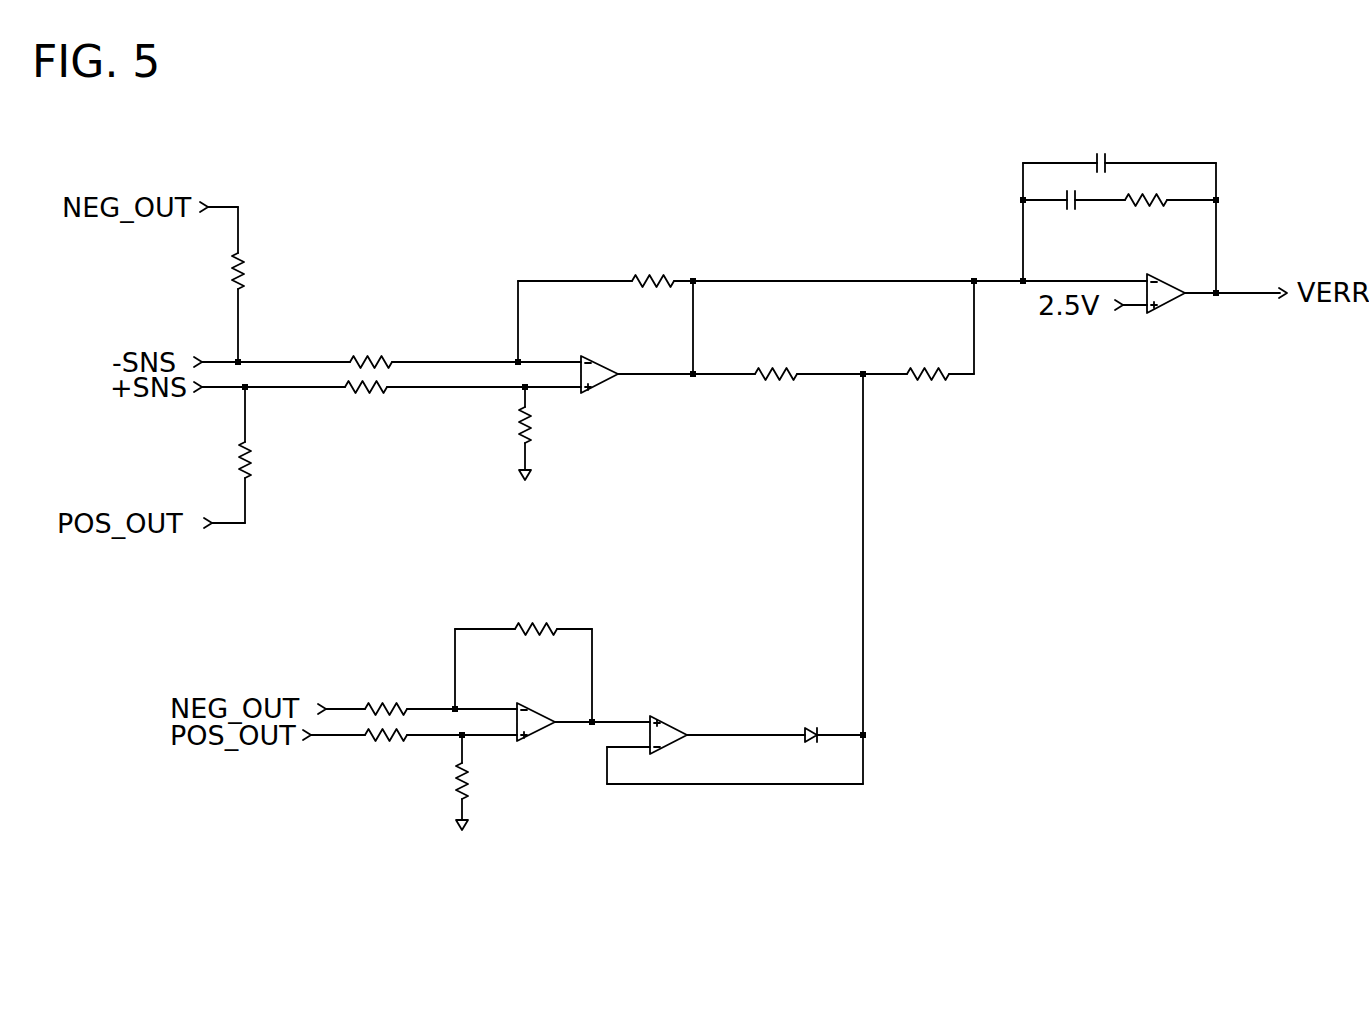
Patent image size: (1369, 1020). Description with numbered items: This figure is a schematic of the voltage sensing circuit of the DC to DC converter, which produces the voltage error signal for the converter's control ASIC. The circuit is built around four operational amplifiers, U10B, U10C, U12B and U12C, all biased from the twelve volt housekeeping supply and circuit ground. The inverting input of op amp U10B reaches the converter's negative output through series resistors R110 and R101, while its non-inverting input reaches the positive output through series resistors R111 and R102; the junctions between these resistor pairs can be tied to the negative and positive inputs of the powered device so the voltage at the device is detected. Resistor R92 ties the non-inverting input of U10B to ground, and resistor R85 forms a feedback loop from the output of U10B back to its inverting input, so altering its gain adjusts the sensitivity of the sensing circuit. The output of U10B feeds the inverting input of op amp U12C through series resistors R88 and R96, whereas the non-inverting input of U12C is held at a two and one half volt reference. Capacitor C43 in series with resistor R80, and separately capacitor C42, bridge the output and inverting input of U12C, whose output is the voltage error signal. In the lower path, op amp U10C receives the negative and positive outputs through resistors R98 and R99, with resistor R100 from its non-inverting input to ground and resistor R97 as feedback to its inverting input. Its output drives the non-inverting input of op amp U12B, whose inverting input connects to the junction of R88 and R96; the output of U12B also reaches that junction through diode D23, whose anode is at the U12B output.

The resistor R101 is at (275, 284).
The resistor R102 is at (282, 455).
The resistor R110 is at (391, 347).
The resistor R111 is at (391, 402).
The resistor R92 is at (552, 433).
The resistor R85 is at (832, 297).
The resistor R88 is at (778, 390).
The resistor R96 is at (918, 347).
The operational amplifier U10B is at (637, 382).
The capacitor C42 is at (1119, 208).
The capacitor C43 is at (1074, 217).
The resistor R80 is at (1165, 215).
The operational amplifier U12C is at (1201, 309).
The resistor R97 is at (523, 672).
The resistor R98 is at (421, 695).
The resistor R99 is at (414, 750).
The resistor R100 is at (498, 782).
The operational amplifier U10C is at (575, 737).
The operational amplifier U12B is at (735, 750).
The diode D23 is at (824, 750).